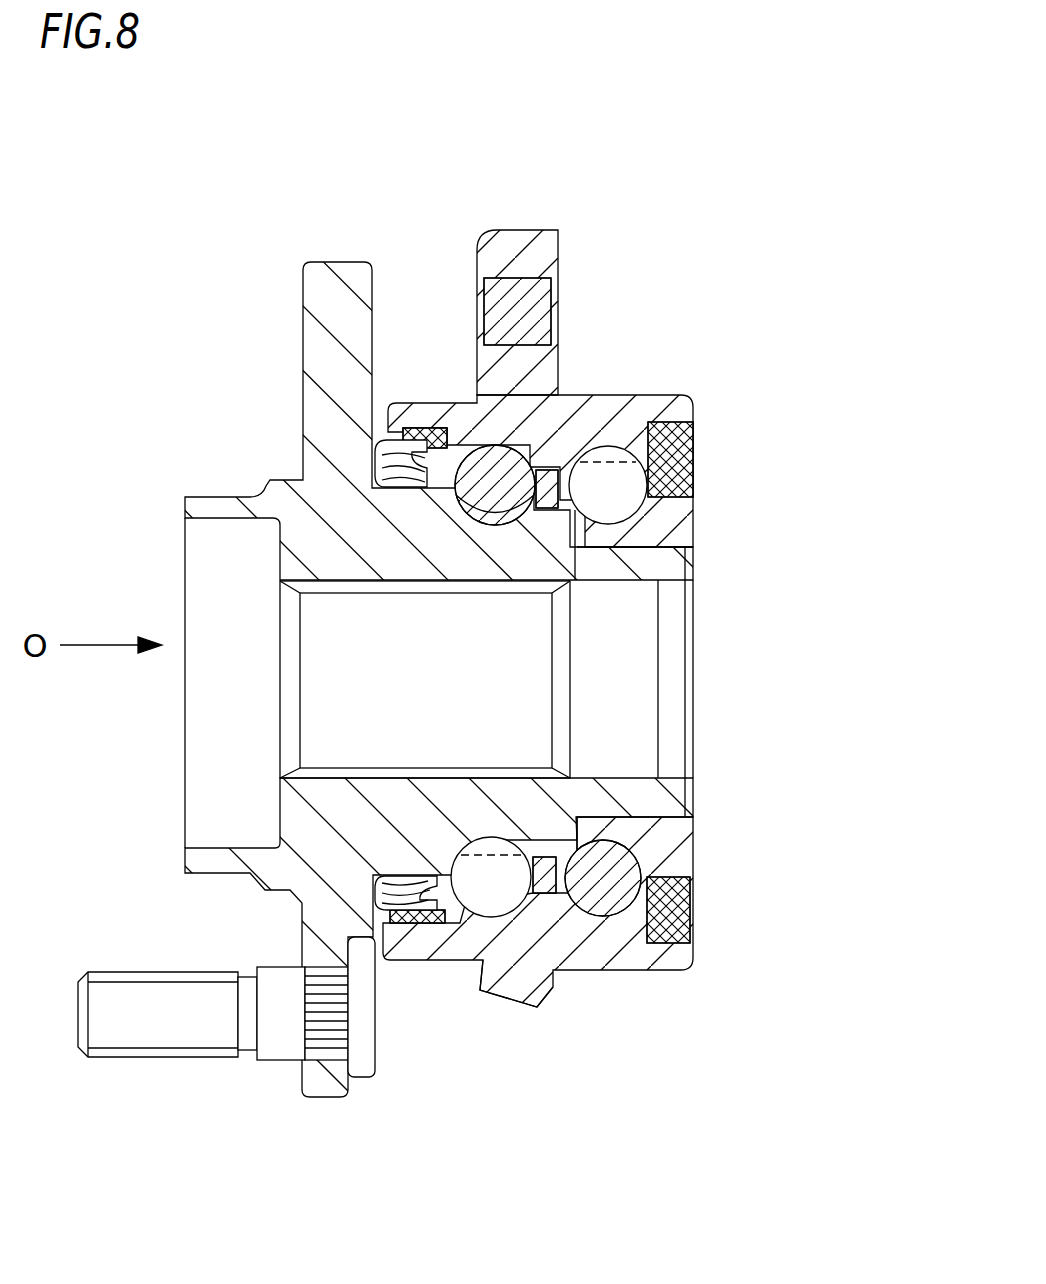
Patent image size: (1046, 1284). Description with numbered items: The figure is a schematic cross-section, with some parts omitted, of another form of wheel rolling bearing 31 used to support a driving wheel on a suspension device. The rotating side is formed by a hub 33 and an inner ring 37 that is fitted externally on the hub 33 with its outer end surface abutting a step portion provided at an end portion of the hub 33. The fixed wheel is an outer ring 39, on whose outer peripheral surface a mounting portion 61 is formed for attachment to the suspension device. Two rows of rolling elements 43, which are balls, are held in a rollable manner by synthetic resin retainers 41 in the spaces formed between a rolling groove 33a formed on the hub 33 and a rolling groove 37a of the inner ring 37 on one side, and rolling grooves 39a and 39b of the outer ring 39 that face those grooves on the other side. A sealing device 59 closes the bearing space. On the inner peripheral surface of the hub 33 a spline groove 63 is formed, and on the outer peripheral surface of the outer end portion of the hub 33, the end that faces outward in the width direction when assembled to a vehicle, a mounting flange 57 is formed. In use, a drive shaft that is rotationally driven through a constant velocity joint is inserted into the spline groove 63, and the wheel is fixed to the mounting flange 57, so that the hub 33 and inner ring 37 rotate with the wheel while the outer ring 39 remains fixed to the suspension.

The wheel rolling bearing 31 is at (712, 394).
The hub 33 is at (307, 543).
The rolling groove 33a is at (490, 573).
The inner ring 37 is at (697, 518).
The rolling groove 37a is at (602, 572).
The outer ring 39 is at (559, 379).
The rolling groove 39a is at (488, 450).
The rolling groove 39b is at (593, 455).
The retainer 41 is at (468, 852).
The rolling element 43 is at (700, 862).
The mounting flange 57 is at (313, 1077).
The sealing device 59 is at (387, 444).
The mounting portion 61 is at (515, 245).
The spline groove 63 is at (371, 772).